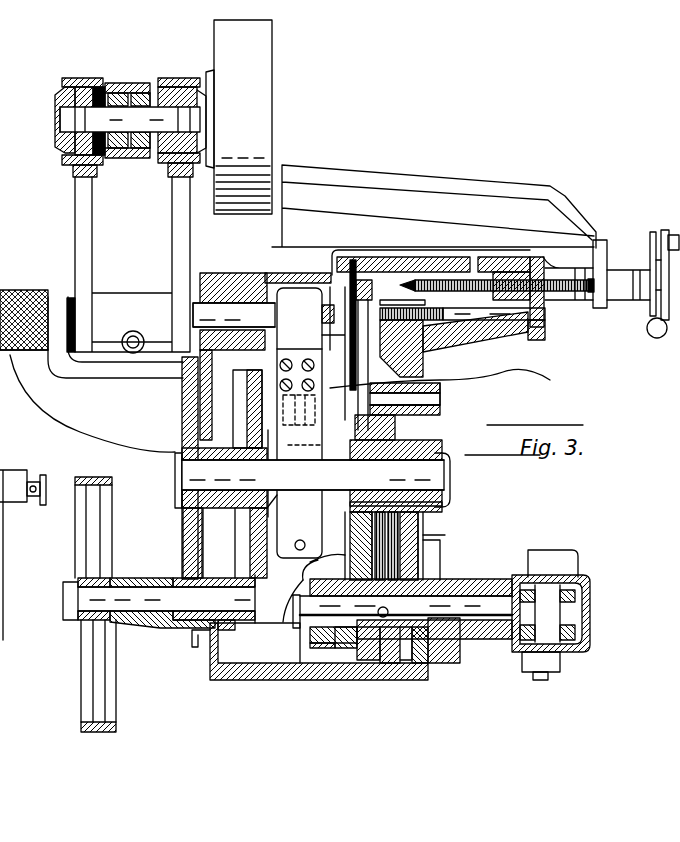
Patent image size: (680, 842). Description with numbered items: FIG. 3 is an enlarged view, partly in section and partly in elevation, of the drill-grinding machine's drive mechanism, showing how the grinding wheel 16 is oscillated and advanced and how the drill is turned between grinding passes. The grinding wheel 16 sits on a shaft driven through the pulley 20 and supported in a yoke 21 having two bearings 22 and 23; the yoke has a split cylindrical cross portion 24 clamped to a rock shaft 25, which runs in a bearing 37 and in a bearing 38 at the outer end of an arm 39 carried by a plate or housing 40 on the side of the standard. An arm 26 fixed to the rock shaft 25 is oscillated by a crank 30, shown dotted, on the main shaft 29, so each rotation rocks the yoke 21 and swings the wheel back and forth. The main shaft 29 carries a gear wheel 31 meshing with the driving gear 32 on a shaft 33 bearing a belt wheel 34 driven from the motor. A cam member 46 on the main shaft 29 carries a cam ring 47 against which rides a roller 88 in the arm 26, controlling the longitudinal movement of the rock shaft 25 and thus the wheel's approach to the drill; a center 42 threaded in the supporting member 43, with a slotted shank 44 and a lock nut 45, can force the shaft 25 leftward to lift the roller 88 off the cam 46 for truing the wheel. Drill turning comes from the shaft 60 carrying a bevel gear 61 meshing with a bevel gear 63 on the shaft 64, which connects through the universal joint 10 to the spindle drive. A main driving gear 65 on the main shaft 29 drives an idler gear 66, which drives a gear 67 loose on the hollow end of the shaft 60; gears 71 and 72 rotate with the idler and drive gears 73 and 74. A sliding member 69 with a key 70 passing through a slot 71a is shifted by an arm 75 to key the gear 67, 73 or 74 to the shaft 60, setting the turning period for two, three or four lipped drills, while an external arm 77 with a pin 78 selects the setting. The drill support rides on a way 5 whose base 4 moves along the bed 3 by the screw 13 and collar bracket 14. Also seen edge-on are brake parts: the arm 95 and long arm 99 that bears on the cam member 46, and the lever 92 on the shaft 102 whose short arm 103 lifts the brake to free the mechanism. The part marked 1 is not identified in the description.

The frame/housing 1 is at (196, 706).
The bed 3 is at (485, 333).
The base 4 is at (434, 206).
The way 5 is at (514, 182).
The universal joint 10 is at (565, 565).
The screw 13 is at (560, 292).
The collar bracket 14 is at (600, 298).
The grinding wheel 16 is at (243, 117).
The pulley 20 is at (121, 85).
The yoke 21 is at (93, 246).
The bearing 22 is at (75, 78).
The bearing 23 is at (175, 76).
The cylindrical cross portion 24 is at (131, 328).
The rock shaft 25 is at (234, 326).
The arm 26 is at (300, 501).
The main shaft 29 is at (312, 480).
The crank 30 is at (396, 473).
The gear wheel 31 is at (237, 400).
The driving gear 32 is at (259, 643).
The shaft 33 is at (159, 601).
The belt wheel 34 is at (80, 676).
The bearing 37 is at (213, 300).
The bearing 38 is at (36, 290).
The arm 39 is at (96, 374).
The plate or housing 40 is at (183, 533).
The center 42 is at (352, 273).
The supporting member 43 is at (418, 340).
The shank 44 is at (523, 312).
The lock nut 45 is at (468, 287).
The cam 46 is at (395, 424).
The cam ring 47 is at (310, 562).
The shaft 60 is at (448, 610).
The bevel gear 61 is at (512, 645).
The bevel gear 63 is at (580, 636).
The shaft 64 is at (556, 596).
The main driving gear 65 is at (392, 440).
The idler gear 66 is at (405, 523).
The gear 67 is at (370, 650).
The member 69 is at (322, 648).
The key 70 is at (433, 642).
The gear 71 is at (410, 537).
The slot 71a is at (347, 648).
The gear 72 is at (430, 543).
The gears 73 is at (384, 663).
The gears 74 is at (430, 665).
The arm 75 is at (296, 628).
The arm 77 is at (3, 540).
The pin 78 is at (43, 478).
The roller 88 is at (180, 450).
The lever 92 is at (443, 405).
The arm 95 is at (370, 297).
The long arm 99 is at (338, 392).
The shaft 102 is at (437, 397).
The short arm 103 is at (456, 381).